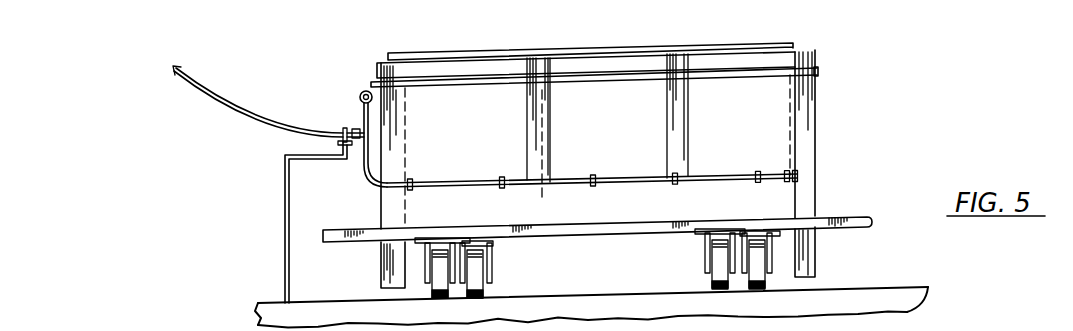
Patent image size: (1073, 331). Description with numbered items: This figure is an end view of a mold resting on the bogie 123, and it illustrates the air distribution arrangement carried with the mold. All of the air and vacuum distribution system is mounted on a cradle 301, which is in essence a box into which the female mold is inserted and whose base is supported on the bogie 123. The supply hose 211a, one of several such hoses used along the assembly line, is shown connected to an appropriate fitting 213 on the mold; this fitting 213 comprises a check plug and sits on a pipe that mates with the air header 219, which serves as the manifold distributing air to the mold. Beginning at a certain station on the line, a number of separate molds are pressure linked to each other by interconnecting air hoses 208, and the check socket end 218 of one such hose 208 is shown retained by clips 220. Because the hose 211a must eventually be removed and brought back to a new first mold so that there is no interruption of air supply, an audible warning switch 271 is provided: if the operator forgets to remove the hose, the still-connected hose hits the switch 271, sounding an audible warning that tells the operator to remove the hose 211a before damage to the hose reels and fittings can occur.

The cradle 301 is at (815, 100).
The bogie 123 is at (872, 221).
The interconnecting air hose 208 is at (572, 180).
The clip 220 is at (415, 177).
The end of hose 218 is at (798, 177).
The air header 219 is at (363, 91).
The hose 211a is at (207, 92).
The fitting 213 is at (358, 130).
The audible warning switch 271 is at (283, 218).